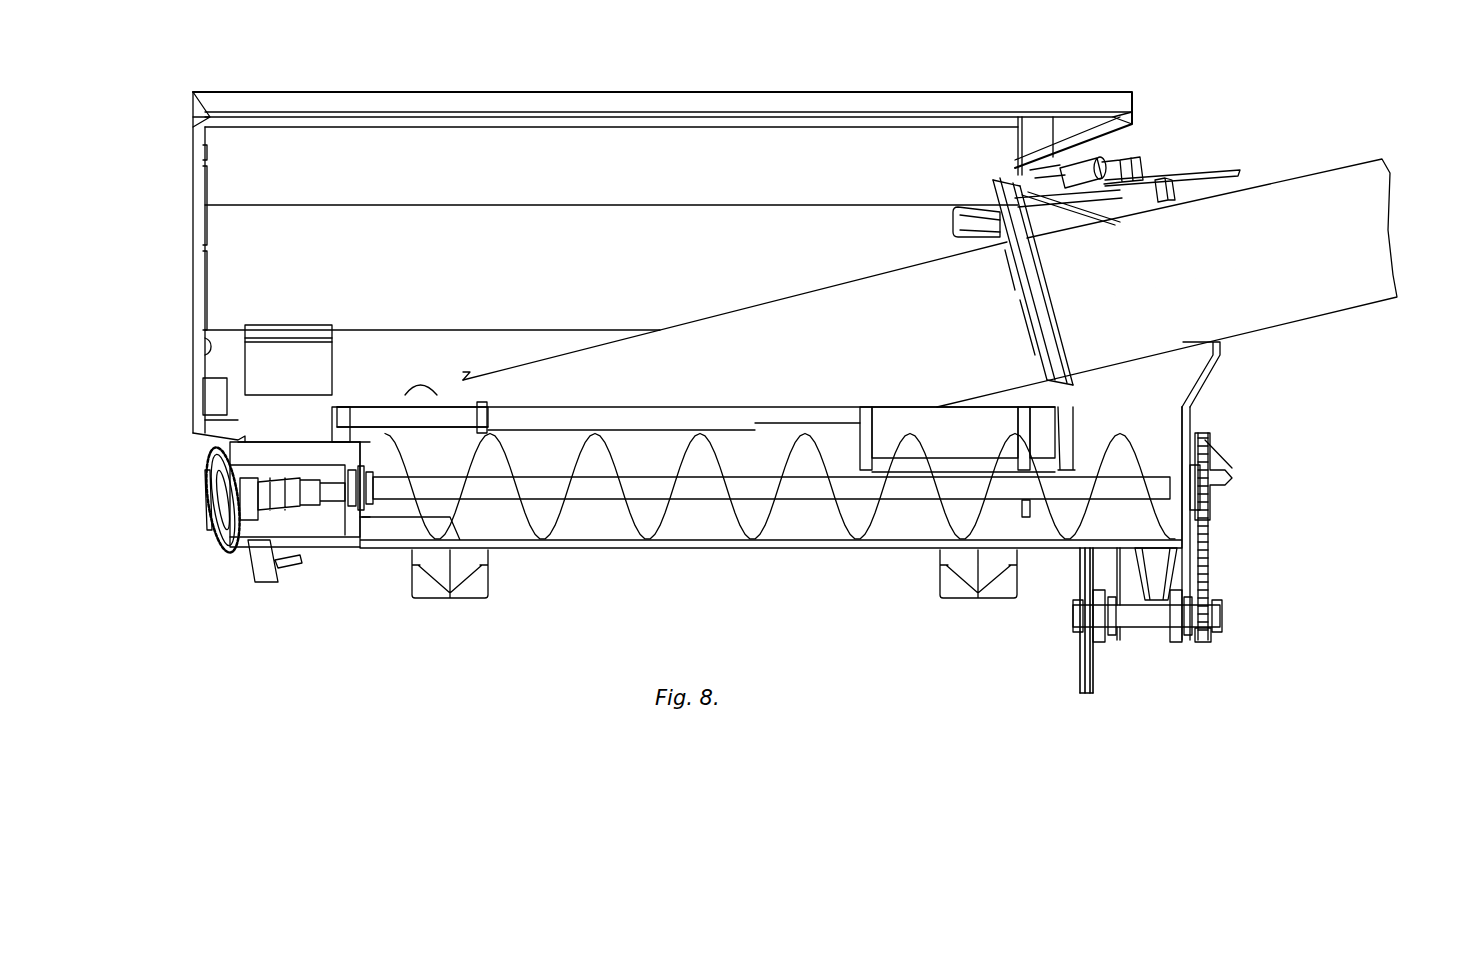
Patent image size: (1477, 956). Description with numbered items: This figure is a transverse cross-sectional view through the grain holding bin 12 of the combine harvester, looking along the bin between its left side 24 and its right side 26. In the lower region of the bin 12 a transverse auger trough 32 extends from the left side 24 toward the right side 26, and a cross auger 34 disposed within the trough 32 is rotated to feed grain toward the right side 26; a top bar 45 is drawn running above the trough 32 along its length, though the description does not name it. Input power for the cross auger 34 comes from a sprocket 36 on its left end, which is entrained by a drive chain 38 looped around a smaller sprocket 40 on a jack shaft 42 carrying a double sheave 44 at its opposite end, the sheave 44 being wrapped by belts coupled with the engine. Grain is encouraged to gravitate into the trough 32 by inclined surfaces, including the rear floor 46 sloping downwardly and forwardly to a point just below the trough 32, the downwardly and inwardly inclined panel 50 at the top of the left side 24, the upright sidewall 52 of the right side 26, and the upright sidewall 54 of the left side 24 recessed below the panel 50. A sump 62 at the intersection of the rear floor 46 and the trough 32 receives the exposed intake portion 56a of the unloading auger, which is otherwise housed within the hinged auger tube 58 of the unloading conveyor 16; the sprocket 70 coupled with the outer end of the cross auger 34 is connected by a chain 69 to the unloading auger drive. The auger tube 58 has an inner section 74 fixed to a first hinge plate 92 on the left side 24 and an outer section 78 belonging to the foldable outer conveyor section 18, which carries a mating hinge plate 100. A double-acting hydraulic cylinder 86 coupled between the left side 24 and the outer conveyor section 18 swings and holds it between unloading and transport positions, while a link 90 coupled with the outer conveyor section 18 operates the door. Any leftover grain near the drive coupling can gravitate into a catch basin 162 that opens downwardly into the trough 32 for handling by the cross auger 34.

The grain holding bin 12 is at (785, 78).
The unloading conveyor 16 is at (1362, 152).
The outer conveyor section 18 is at (1360, 252).
The left side 24 is at (1146, 120).
The right side 26 is at (188, 190).
The auger trough 32 is at (783, 530).
The cross auger 34 is at (597, 520).
The sprocket 36 is at (1203, 463).
The drive chain 38 is at (1200, 595).
The smaller sprocket 40 is at (1200, 632).
The jack shaft 42 is at (1135, 620).
The double sheave 44 is at (1078, 677).
The top bar 45 is at (718, 410).
The rear floor 46 is at (600, 140).
The inclined panel 50 is at (1068, 168).
The upright sidewall 52 is at (203, 352).
The upright sidewall 54 is at (1065, 412).
The intake portion 56a is at (430, 388).
The auger tube 58 is at (745, 300).
The sump 62 is at (283, 555).
The chain 69 is at (208, 462).
The sprocket 70 is at (215, 503).
The inner section of auger tube 74 is at (697, 340).
The outer section of auger tube 78 is at (1307, 187).
The double-acting hydraulic cylinder 86 is at (1098, 165).
The link 90 is at (1222, 173).
The first hinge plate 92 is at (1008, 245).
The hinge plate 100 is at (1040, 240).
The catch basin 162 is at (1172, 418).